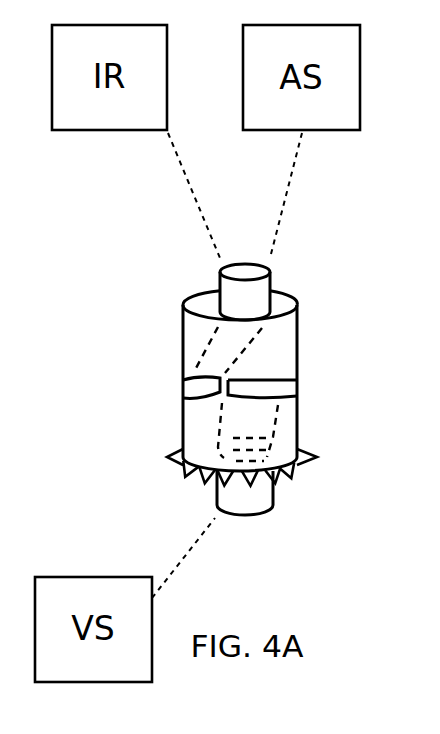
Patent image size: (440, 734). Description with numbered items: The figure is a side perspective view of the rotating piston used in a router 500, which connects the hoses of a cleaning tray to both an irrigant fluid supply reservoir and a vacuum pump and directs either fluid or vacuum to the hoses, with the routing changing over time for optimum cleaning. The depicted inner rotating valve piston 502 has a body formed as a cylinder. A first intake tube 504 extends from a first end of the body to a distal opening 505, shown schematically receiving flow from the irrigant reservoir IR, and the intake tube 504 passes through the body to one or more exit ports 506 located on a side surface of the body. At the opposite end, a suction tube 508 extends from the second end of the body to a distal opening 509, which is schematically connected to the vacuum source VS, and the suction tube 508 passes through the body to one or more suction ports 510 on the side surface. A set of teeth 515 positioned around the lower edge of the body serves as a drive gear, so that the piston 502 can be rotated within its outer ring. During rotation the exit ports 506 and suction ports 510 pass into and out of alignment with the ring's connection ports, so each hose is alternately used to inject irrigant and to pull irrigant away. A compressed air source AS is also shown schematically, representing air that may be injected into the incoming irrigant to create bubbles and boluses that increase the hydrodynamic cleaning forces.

The router 500 is at (439, 222).
The inner rotating valve piston 502 is at (325, 315).
The first intake tube 504 is at (227, 288).
The distal opening 505 is at (234, 246).
The exit ports 506 is at (163, 384).
The suction tube 508 is at (273, 503).
The distal opening 509 is at (263, 535).
The suction ports 510 is at (290, 385).
The teeth 515 is at (208, 480).